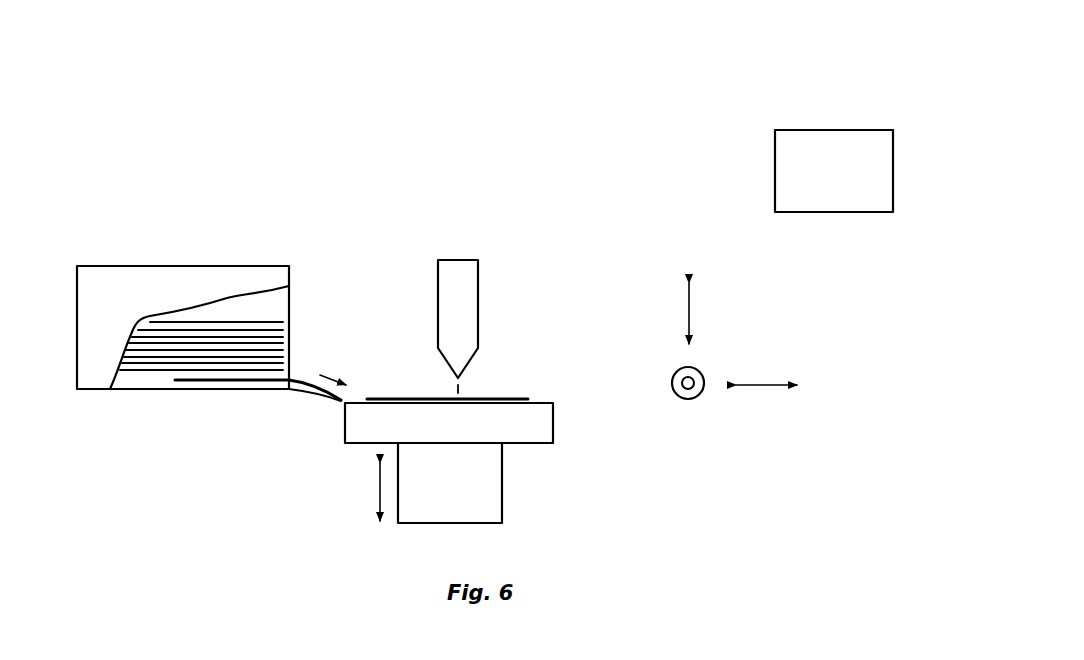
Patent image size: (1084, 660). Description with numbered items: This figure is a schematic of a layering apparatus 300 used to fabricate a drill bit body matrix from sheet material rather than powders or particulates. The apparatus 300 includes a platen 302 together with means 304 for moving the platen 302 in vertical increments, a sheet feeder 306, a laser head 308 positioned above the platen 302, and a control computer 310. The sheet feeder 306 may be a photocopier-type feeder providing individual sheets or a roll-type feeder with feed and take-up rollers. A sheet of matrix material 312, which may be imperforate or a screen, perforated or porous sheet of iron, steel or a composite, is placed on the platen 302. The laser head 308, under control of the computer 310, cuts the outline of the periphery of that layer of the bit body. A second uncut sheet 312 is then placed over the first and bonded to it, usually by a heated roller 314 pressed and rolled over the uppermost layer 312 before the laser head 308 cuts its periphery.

The apparatus 300 is at (534, 223).
The platen 302 is at (537, 427).
The means for moving platen in vertical increments 304 is at (473, 490).
The sheet feeder 306 is at (217, 263).
The laser head 308 is at (455, 322).
The control computer 310 is at (852, 145).
The sheet of matrix material 312 is at (297, 378).
The heated roller 314 is at (702, 372).